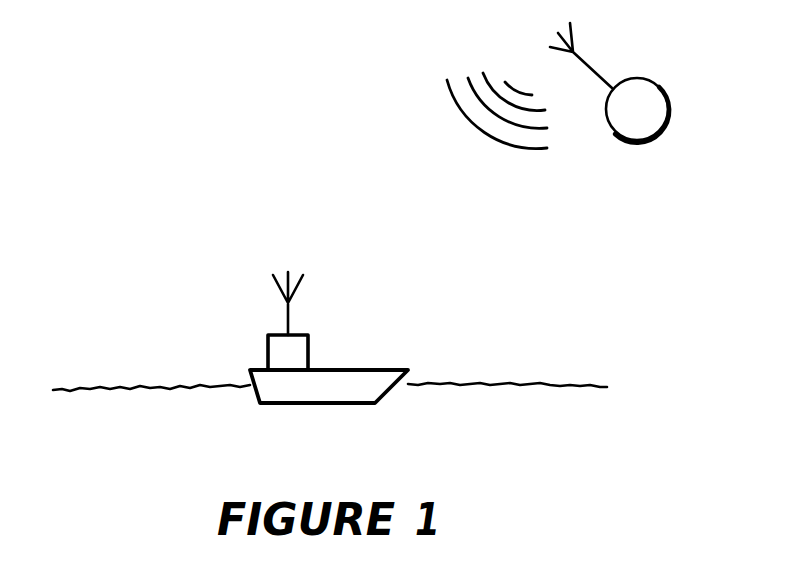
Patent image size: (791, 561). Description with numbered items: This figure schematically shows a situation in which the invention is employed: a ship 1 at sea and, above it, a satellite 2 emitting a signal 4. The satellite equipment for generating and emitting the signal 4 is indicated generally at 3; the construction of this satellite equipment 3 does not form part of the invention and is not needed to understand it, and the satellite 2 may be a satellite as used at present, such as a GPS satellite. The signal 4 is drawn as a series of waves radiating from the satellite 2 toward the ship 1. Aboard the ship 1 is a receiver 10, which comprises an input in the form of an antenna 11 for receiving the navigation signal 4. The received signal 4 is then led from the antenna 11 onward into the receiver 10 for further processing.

The ship 1 is at (330, 403).
The satellite 2 is at (666, 97).
The satellite equipment 3 is at (575, 37).
The signal 4 is at (500, 143).
The receiver 10 is at (310, 347).
The input (antenna) 11 is at (277, 290).